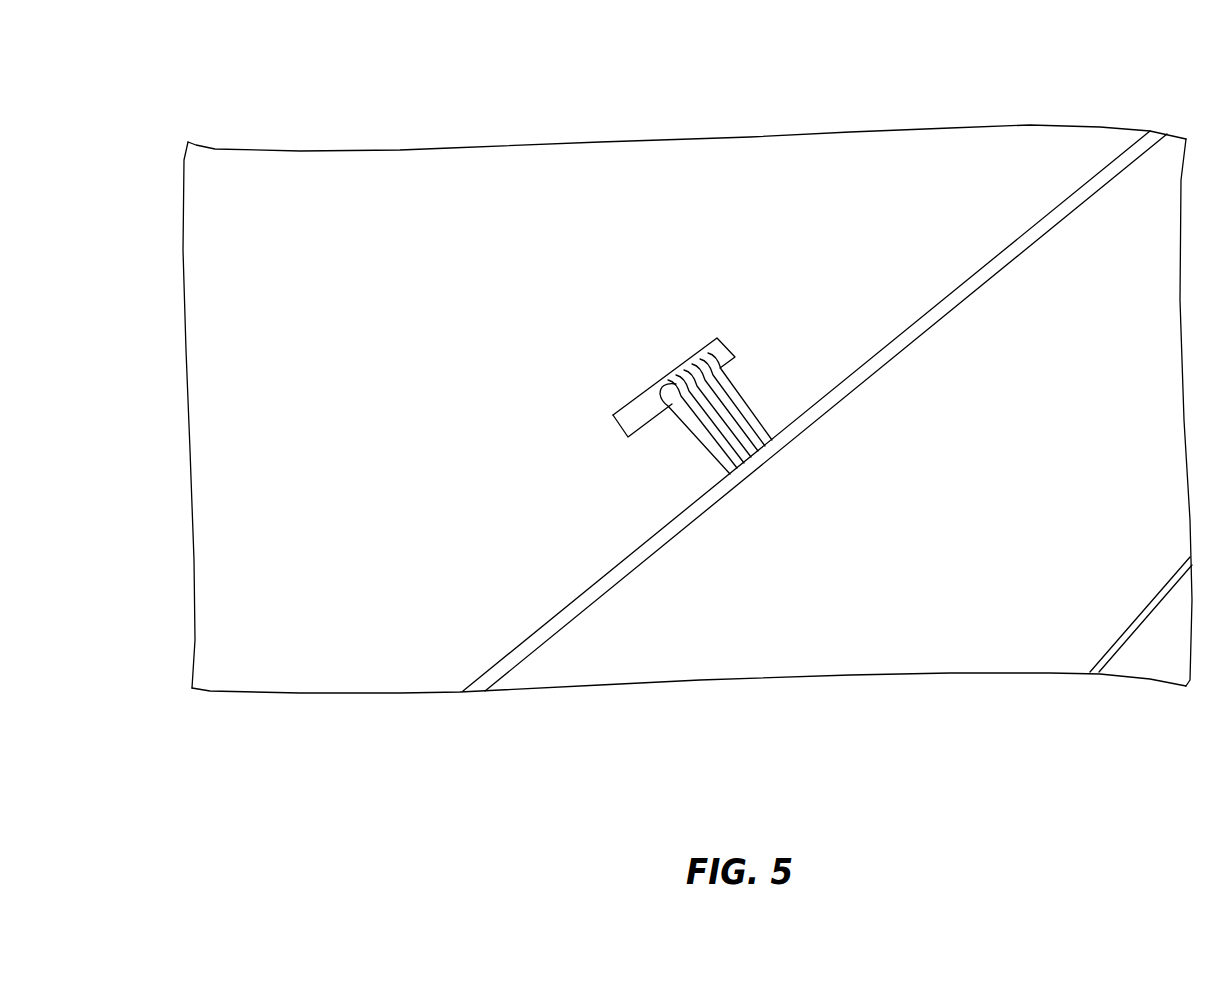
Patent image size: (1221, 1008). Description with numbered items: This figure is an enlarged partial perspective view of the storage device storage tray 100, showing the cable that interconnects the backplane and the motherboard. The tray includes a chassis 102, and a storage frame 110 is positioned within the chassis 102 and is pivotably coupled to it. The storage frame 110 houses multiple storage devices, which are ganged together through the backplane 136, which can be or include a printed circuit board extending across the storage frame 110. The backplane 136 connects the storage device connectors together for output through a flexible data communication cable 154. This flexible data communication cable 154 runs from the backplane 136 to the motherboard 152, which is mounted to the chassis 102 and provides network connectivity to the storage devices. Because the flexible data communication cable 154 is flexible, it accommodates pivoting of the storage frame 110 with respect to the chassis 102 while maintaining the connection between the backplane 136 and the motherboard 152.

The storage device storage tray 100 is at (687, 387).
The chassis 102 is at (380, 165).
The storage frame 110 is at (816, 676).
The backplane 136 is at (1003, 266).
The motherboard 152 is at (650, 412).
The flexible data communication cable 154 is at (738, 452).